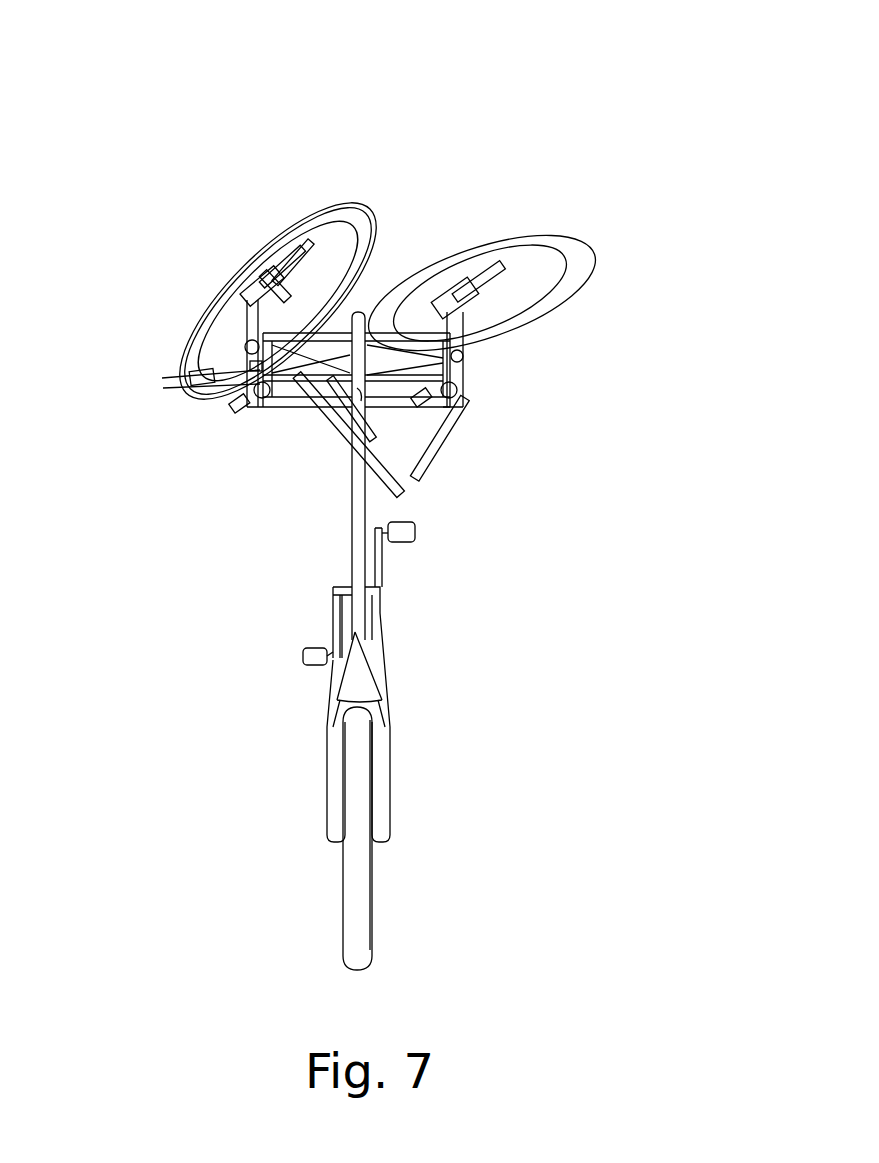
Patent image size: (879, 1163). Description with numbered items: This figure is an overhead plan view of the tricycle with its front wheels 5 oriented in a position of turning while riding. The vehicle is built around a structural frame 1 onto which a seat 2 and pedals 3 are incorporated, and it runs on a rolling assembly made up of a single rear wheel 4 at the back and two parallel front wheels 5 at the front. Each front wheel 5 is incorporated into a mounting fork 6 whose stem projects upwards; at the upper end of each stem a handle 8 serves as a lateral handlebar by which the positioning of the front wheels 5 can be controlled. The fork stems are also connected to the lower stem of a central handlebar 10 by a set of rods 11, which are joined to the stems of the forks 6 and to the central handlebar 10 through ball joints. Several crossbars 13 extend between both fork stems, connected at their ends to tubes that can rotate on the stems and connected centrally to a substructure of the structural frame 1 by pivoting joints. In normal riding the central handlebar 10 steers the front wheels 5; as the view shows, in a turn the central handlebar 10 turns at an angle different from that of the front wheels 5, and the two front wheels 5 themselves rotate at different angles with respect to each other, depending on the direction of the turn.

The structural frame 1 is at (360, 518).
The seat 2 is at (363, 675).
The pedals 3 is at (305, 652).
The rear wheel 4 is at (358, 900).
The front wheels 5 is at (566, 240).
The mounting forks 6 is at (252, 294).
The handles 8 is at (162, 382).
The central handlebar 10 is at (350, 418).
The set of rods 11 is at (280, 412).
The crossbars 13 is at (462, 373).